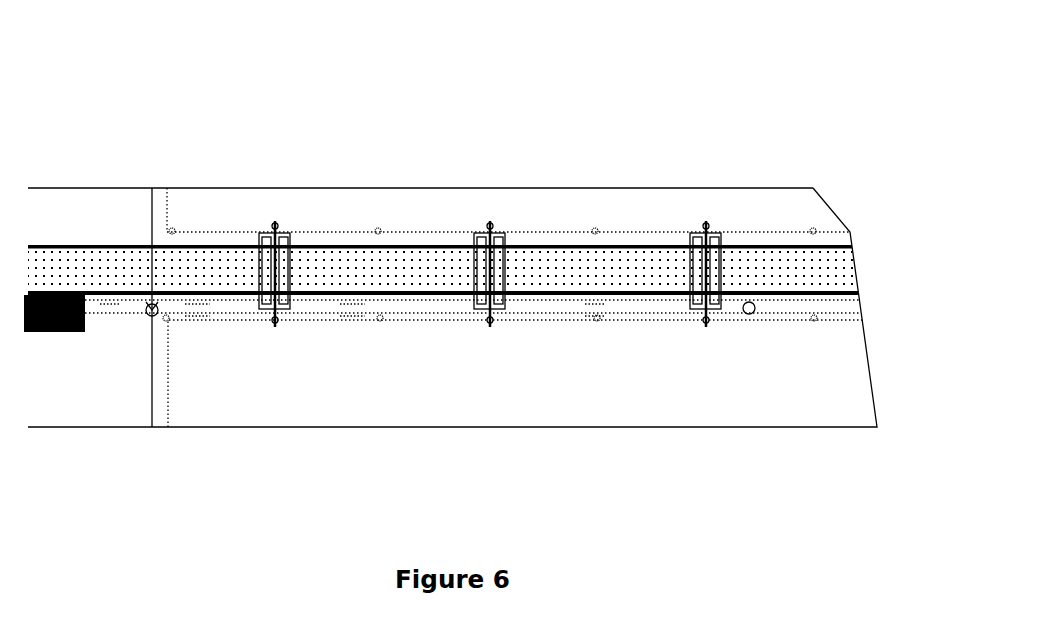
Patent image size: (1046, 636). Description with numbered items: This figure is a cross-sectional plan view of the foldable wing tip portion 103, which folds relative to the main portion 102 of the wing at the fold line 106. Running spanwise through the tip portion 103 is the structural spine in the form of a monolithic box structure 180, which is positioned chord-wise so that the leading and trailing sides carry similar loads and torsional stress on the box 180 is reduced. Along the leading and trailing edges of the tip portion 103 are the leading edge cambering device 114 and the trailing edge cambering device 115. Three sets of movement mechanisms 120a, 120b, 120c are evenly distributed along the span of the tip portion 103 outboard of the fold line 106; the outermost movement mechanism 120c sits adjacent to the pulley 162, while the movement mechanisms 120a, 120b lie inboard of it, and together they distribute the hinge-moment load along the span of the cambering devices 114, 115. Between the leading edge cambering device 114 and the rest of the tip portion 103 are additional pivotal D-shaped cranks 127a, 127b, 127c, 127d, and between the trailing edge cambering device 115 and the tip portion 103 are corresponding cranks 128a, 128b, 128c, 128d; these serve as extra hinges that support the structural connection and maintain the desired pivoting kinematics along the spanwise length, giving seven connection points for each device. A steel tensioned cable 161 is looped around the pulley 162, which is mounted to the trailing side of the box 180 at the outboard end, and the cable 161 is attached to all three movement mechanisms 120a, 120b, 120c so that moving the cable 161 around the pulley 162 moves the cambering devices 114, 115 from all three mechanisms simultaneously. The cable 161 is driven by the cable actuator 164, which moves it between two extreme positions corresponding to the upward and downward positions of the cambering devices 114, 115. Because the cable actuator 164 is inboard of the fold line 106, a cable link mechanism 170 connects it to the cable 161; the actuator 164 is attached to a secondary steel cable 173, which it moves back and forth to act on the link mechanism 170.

The main portion 102 is at (52, 188).
The tip portion 103 is at (633, 88).
The fold line 106 is at (152, 224).
The leading edge cambering device 114 is at (463, 175).
The trailing edge cambering device 115 is at (522, 392).
The movement mechanism 120a is at (277, 221).
The movement mechanism 120b is at (490, 222).
The movement mechanism 120c is at (713, 231).
The pivotal D-shaped crank 127a is at (173, 228).
The pivotal D-shaped crank 127b is at (377, 228).
The pivotal D-shaped crank 127c is at (594, 228).
The pivotal D-shaped crank 127d is at (813, 228).
The pivotal D-shaped crank 128a is at (167, 320).
The pivotal D-shaped crank 128b is at (380, 320).
The pivotal D-shaped crank 128c is at (597, 320).
The pivotal D-shaped crank 128d is at (814, 320).
The tensioned cable 161 is at (415, 315).
The pulley 162 is at (750, 314).
The cable actuator 164 is at (54, 333).
The cable link mechanism 170 is at (158, 316).
The secondary cable 173 is at (130, 316).
The box structure 180 is at (836, 270).